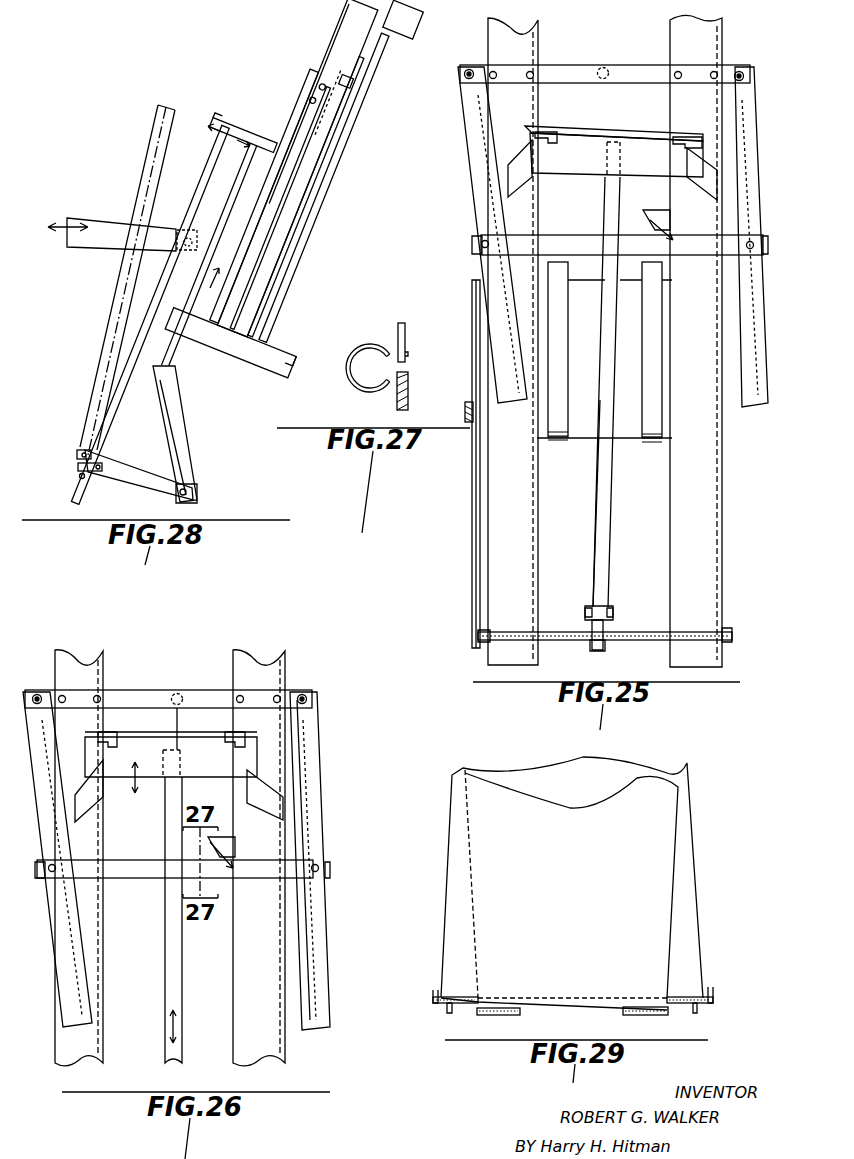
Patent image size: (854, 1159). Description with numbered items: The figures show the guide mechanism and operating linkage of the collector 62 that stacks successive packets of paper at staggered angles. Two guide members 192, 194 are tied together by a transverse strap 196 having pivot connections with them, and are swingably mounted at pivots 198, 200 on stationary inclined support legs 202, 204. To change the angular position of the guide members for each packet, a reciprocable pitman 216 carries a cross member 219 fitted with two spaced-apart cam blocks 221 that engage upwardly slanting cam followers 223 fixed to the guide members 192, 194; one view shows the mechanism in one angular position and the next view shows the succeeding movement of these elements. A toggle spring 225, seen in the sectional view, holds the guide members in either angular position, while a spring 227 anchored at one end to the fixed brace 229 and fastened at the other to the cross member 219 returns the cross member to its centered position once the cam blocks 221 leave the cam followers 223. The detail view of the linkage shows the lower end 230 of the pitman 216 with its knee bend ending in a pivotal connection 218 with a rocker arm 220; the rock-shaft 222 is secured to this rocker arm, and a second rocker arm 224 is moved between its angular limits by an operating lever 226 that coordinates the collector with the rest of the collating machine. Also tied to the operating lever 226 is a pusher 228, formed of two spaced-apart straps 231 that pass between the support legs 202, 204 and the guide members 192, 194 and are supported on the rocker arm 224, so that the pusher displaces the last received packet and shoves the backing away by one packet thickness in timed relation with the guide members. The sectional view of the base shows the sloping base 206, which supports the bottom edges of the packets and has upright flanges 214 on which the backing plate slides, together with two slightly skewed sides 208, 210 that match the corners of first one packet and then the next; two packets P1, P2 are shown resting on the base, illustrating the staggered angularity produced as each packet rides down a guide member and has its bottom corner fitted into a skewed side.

In FIG. 25, the collector 62 is at (482, 492).
In FIG. 26, the collector 62 is at (337, 905).
In FIG. 25, the guide member 192 is at (533, 281).
In FIG. 26, the guide member 192 is at (58, 975).
In FIG. 28, the guide member 192 is at (329, 158).
In FIG. 25, the guide member 194 is at (763, 302).
In FIG. 26, the guide member 194 is at (325, 988).
In FIG. 25, the transverse strap 196 is at (565, 234).
In FIG. 26, the transverse strap 196 is at (136, 868).
In FIG. 27, the transverse strap 196 is at (412, 395).
In FIG. 25, the pivot mounting 198 is at (470, 70).
In FIG. 26, the pivot mounting 198 is at (37, 696).
In FIG. 25, the pivot mounting 200 is at (740, 74).
In FIG. 26, the pivot mounting 200 is at (302, 696).
In FIG. 25, the support leg 202 is at (500, 528).
In FIG. 26, the support leg 202 is at (77, 662).
In FIG. 25, the support leg 204 is at (715, 535).
In FIG. 26, the support leg 204 is at (257, 660).
In FIG. 28, the support leg 204 is at (341, 25).
In FIG. 28, the sloping base 206 is at (272, 380).
In FIG. 29, the skewed side 208 is at (473, 1007).
In FIG. 29, the skewed side 210 is at (668, 1012).
In FIG. 29, the upright flange 214 is at (433, 992).
In FIG. 25, the pitman 216 is at (597, 525).
In FIG. 26, the pitman 216 is at (170, 950).
In FIG. 28, the pitman 216 is at (266, 228).
In FIG. 25, the pivotal connection 218 is at (612, 612).
In FIG. 28, the pivotal connection 218 is at (195, 491).
In FIG. 25, the cross member 219 is at (633, 133).
In FIG. 26, the cross member 219 is at (160, 770).
In FIG. 28, the cross member 219 is at (343, 125).
In FIG. 25, the rocker arm 220 is at (612, 623).
In FIG. 28, the rocker arm 220 is at (137, 474).
In FIG. 25, the cam block 221 is at (548, 135).
In FIG. 26, the cam block 221 is at (110, 740).
In FIG. 28, the cam block 221 is at (343, 88).
In FIG. 25, the rock-shaft 222 is at (562, 630).
In FIG. 28, the rock-shaft 222 is at (90, 502).
In FIG. 25, the cam follower 223 is at (518, 170).
In FIG. 26, the cam follower 223 is at (83, 795).
In FIG. 25, the rocker arm 224 is at (473, 585).
In FIG. 28, the rocker arm 224 is at (195, 195).
In FIG. 25, the toggle spring 225 is at (667, 233).
In FIG. 26, the toggle spring 225 is at (235, 850).
In FIG. 27, the toggle spring 225 is at (342, 353).
In FIG. 25, the operating lever 226 is at (465, 416).
In FIG. 28, the operating lever 226 is at (107, 218).
In FIG. 25, the spring 227 is at (616, 128).
In FIG. 26, the spring 227 is at (178, 683).
In FIG. 28, the spring 227 is at (333, 56).
In FIG. 25, the pusher 228 is at (591, 450).
In FIG. 28, the pusher 228 is at (240, 125).
In FIG. 25, the fixed brace 229 is at (563, 72).
In FIG. 26, the fixed brace 229 is at (123, 688).
In FIG. 28, the fixed brace 229 is at (390, 34).
In FIG. 25, the lower end of pitman 230 is at (607, 568).
In FIG. 28, the lower end of pitman 230 is at (185, 407).
In FIG. 25, the strap 231 is at (563, 447).
In FIG. 28, the strap 231 is at (273, 289).
In FIG. 29, the packet P1 is at (692, 807).
In FIG. 29, the packet P2 is at (667, 862).